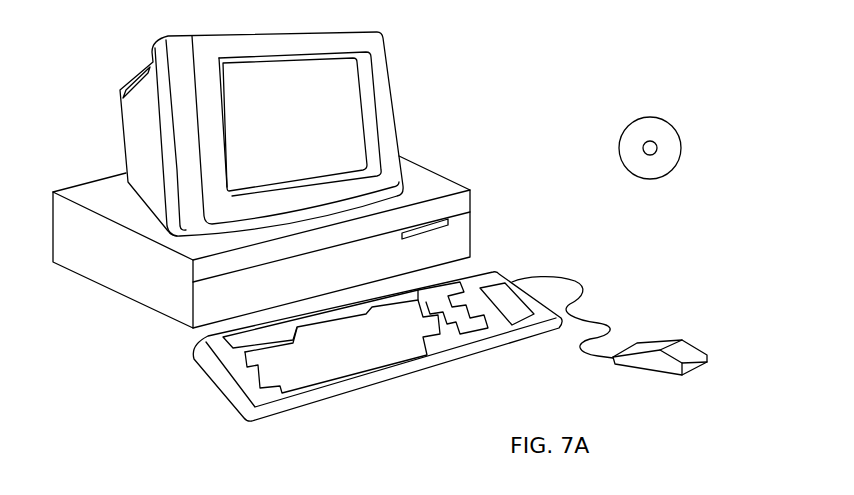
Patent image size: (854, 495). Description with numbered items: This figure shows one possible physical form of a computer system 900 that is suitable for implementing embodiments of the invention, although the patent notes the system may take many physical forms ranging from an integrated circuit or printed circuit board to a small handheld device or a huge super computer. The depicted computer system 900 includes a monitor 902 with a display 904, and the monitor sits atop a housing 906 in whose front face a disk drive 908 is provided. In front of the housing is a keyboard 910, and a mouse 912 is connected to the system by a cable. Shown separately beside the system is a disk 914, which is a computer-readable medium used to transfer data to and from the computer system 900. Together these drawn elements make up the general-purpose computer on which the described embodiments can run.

The computer system 900 is at (564, 48).
The monitor 902 is at (396, 135).
The display 904 is at (358, 87).
The housing 906 is at (157, 316).
The disk drive 908 is at (448, 218).
The keyboard 910 is at (382, 381).
The mouse 912 is at (698, 346).
The disk 914 is at (665, 121).